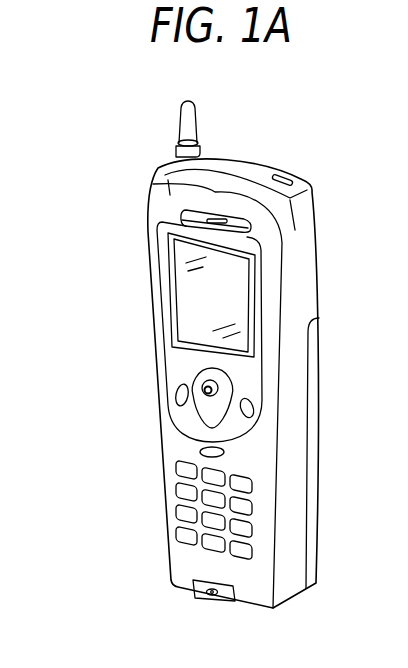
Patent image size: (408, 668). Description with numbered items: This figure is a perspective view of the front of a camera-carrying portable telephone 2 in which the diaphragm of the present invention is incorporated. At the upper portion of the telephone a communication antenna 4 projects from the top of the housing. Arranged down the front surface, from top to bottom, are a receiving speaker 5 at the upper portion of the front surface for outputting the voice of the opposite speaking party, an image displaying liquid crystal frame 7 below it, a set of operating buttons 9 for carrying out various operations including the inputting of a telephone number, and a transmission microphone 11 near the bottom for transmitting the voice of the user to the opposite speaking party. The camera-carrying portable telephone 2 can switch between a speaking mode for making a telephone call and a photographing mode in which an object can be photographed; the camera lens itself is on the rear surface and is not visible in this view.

The camera-carrying portable telephone 2 is at (86, 190).
The communication antenna 4 is at (187, 119).
The receiving speaker 5 is at (289, 183).
The image displaying liquid crystal frame 7 is at (252, 297).
The operating buttons 9 is at (255, 373).
The transmission microphone 11 is at (210, 593).